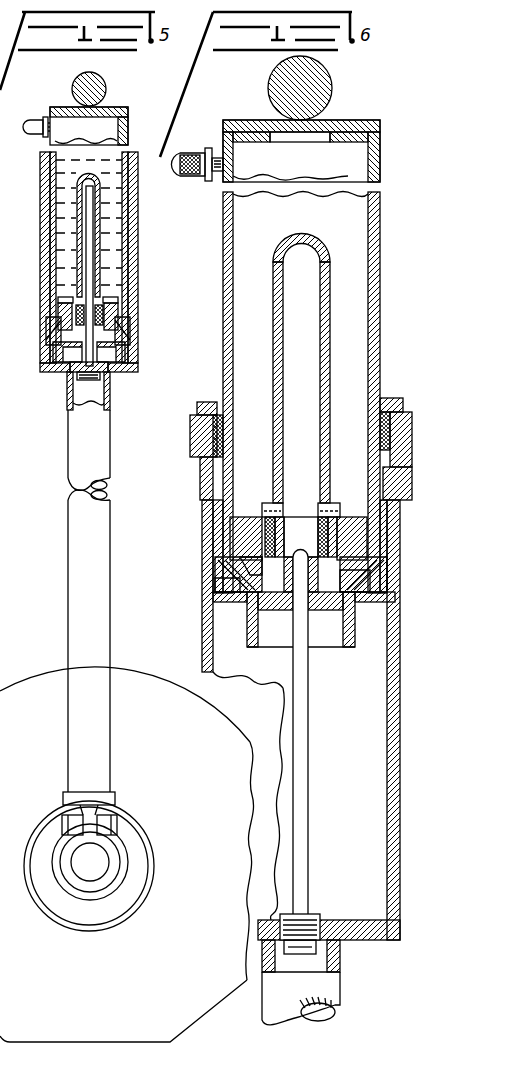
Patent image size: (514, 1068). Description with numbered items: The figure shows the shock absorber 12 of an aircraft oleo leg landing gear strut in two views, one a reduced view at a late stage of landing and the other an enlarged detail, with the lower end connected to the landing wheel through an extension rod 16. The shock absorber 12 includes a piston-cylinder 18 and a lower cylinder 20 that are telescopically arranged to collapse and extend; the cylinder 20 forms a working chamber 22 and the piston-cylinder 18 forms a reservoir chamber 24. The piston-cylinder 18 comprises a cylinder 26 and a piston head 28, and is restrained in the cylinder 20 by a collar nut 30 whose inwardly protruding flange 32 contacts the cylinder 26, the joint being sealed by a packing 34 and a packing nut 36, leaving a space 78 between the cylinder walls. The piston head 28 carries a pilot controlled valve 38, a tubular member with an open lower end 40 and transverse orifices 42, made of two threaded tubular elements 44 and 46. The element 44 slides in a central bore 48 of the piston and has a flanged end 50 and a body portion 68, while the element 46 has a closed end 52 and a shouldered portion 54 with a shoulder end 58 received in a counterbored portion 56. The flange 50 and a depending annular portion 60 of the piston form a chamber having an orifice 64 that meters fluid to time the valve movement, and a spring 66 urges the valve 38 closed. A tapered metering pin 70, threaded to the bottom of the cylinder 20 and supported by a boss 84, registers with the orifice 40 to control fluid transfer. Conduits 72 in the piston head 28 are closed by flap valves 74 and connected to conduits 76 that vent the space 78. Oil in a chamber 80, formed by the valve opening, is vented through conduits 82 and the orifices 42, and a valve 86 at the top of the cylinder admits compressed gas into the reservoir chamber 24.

In FIG. 6, the shock absorber 12 is at (189, 526).
In FIG. 6, the extension rod 16 is at (330, 988).
In FIG. 6, the piston-cylinder 18 is at (384, 286).
In FIG. 6, the cylinder 20 is at (410, 626).
In FIG. 6, the working chamber 22 is at (282, 796).
In FIG. 6, the reservoir chamber 24 is at (301, 172).
In FIG. 6, the cylinder 26 is at (378, 335).
In FIG. 6, the piston head 28 is at (228, 586).
In FIG. 6, the collar nut 30 is at (402, 442).
In FIG. 6, the flange 32 is at (400, 470).
In FIG. 6, the packing 34 is at (392, 422).
In FIG. 6, the packing nut 36 is at (390, 406).
In FIG. 5, the pilot controlled valve 38 is at (105, 298).
In FIG. 6, the pilot controlled valve 38 is at (330, 510).
In FIG. 6, the open lower end 40 is at (282, 612).
In FIG. 5, the transverse orifices 42 is at (100, 308).
In FIG. 6, the transverse orifices 42 is at (286, 510).
In FIG. 5, the tubular element 44 is at (52, 328).
In FIG. 6, the tubular element 44 is at (316, 548).
In FIG. 5, the tubular element 46 is at (80, 233).
In FIG. 6, the tubular element 46 is at (276, 386).
In FIG. 6, the central bore 48 is at (322, 612).
In FIG. 6, the flanged end 50 is at (350, 620).
In FIG. 6, the closed end 52 is at (308, 248).
In FIG. 6, the shouldered portion 54 is at (268, 532).
In FIG. 6, the counterbored portion 56 is at (372, 580).
In FIG. 6, the shoulder end 58 is at (370, 563).
In FIG. 6, the depending annular portion 60 is at (346, 644).
In FIG. 6, the orifice 64 is at (382, 600).
In FIG. 5, the spring 66 is at (65, 345).
In FIG. 6, the spring 66 is at (252, 615).
In FIG. 6, the body portion 68 is at (255, 560).
In FIG. 5, the tapered metering pin 70 is at (93, 270).
In FIG. 6, the tapered metering pin 70 is at (302, 812).
In FIG. 6, the conduits 72 is at (236, 522).
In FIG. 5, the flap valves 74 is at (122, 345).
In FIG. 6, the flap valves 74 is at (214, 597).
In FIG. 6, the conduits 76 is at (232, 560).
In FIG. 5, the space 78 is at (130, 238).
In FIG. 6, the space 78 is at (222, 487).
In FIG. 5, the chamber 80 is at (112, 330).
In FIG. 6, the chamber 80 is at (322, 562).
In FIG. 5, the conduits 82 is at (105, 318).
In FIG. 6, the conduits 82 is at (336, 522).
In FIG. 5, the boss 84 is at (72, 374).
In FIG. 6, the boss 84 is at (322, 918).
In FIG. 6, the valve 86 is at (206, 156).